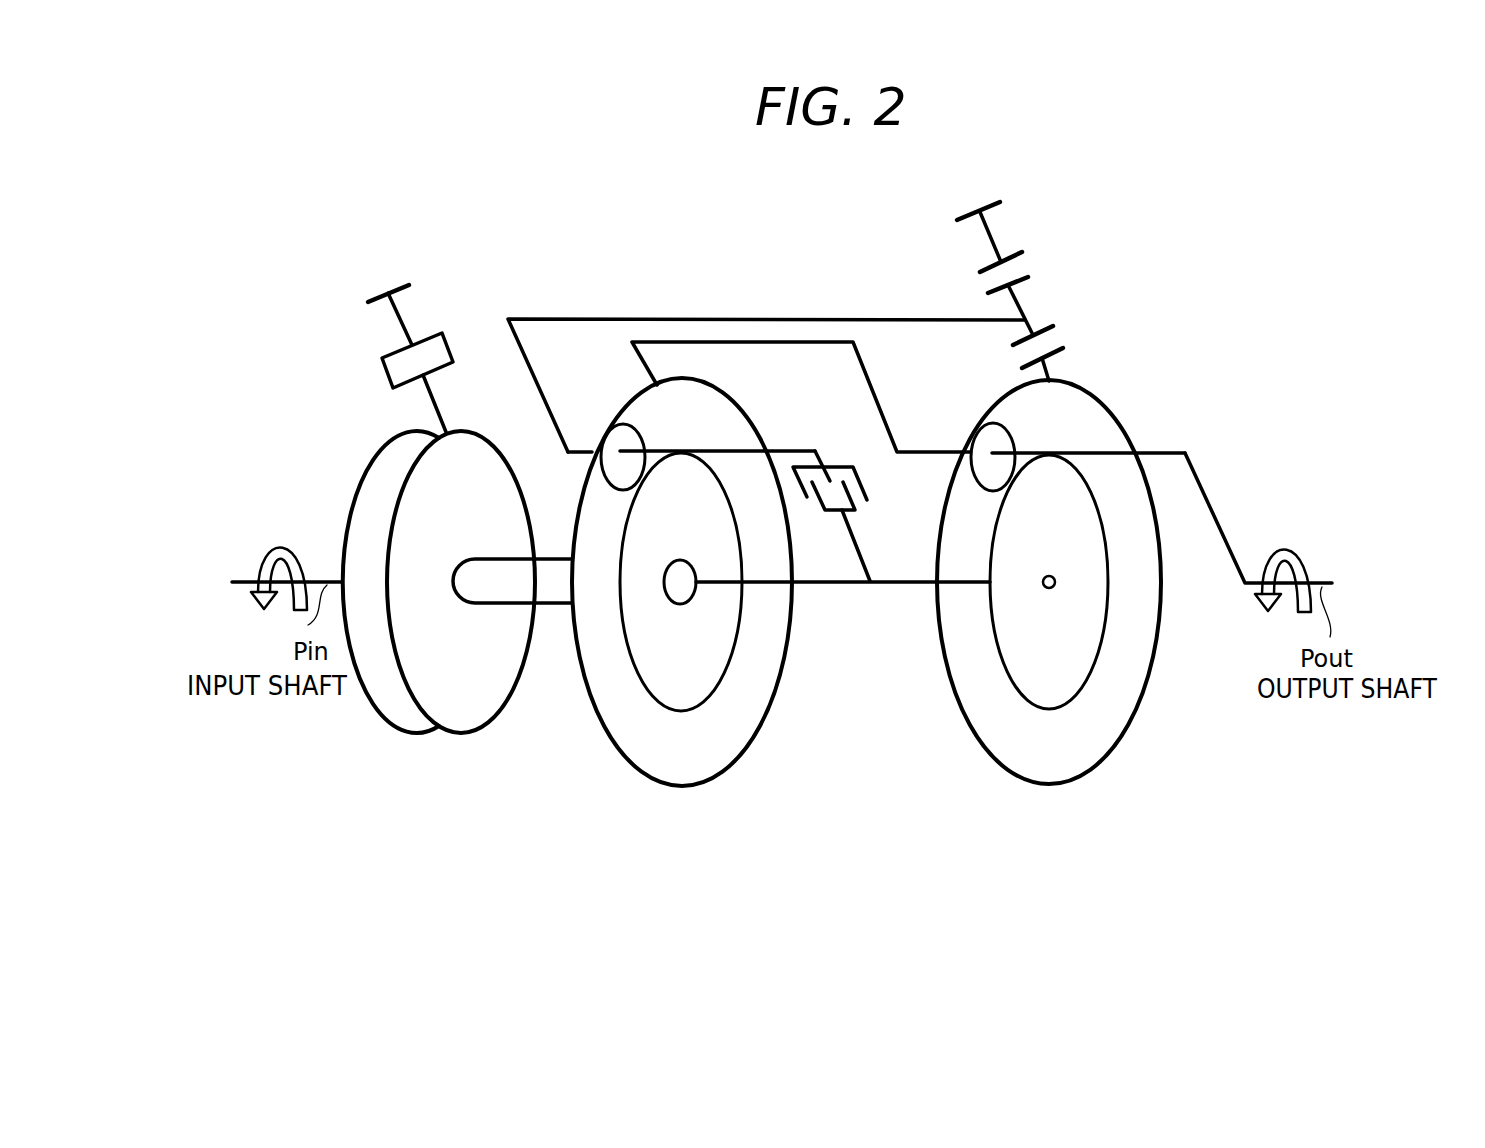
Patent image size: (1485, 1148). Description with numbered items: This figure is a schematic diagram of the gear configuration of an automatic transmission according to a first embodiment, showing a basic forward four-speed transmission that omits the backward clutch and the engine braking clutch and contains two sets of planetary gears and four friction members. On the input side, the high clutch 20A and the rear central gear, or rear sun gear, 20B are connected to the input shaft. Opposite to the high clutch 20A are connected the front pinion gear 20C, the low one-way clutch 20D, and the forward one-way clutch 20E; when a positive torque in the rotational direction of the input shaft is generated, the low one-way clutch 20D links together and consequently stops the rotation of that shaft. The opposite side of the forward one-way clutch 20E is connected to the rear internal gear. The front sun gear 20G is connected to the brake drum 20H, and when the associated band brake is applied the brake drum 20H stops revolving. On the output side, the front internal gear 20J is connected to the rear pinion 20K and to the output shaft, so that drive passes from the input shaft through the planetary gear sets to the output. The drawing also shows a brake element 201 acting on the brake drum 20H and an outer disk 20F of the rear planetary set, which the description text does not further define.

The brake 201 is at (433, 330).
The high clutch 20A is at (813, 507).
The rear central gear (sun gear) 20B is at (1013, 685).
The front pinion gear 20C is at (642, 437).
The low one-way clutch 20D is at (1005, 252).
The forward one-way clutch 20E is at (1040, 327).
The output disk 20F is at (1058, 787).
The front sun gear 20G is at (712, 690).
The brake drum 20H is at (478, 733).
The front internal gear 20J is at (682, 787).
The rear pinion 20K is at (1008, 430).